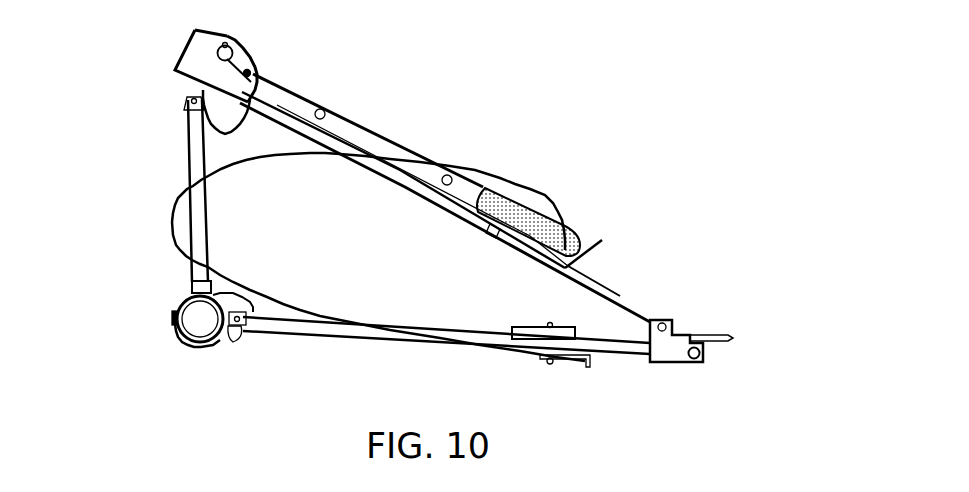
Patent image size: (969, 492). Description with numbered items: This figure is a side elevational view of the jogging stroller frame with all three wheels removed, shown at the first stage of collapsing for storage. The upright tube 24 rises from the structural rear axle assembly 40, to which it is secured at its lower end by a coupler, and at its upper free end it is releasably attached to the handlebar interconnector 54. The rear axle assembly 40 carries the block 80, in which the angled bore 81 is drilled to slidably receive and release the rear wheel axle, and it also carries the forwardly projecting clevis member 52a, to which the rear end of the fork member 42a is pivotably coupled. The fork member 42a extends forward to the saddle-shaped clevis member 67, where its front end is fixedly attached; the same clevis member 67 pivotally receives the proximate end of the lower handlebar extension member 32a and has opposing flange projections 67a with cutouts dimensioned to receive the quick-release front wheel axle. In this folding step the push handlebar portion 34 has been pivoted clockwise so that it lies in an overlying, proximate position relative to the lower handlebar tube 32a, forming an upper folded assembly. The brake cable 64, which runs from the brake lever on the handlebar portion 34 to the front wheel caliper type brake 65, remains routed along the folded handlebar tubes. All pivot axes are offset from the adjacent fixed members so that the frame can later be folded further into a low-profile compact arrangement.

The handlebar interconnector 54 is at (186, 56).
The push handlebar portion 34 is at (373, 132).
The upright tube 24 is at (190, 150).
The brake cable 64 is at (243, 163).
The structural rear axle assembly 40 is at (171, 286).
The lower handlebar extension member 32a is at (468, 222).
The block 80 is at (176, 316).
The bore 81 is at (203, 325).
The clevis member 52a is at (240, 336).
The fork member 42a is at (330, 333).
The caliper type brake 65 is at (570, 358).
The clevis member 67 is at (667, 362).
The flange projection 67a is at (705, 353).